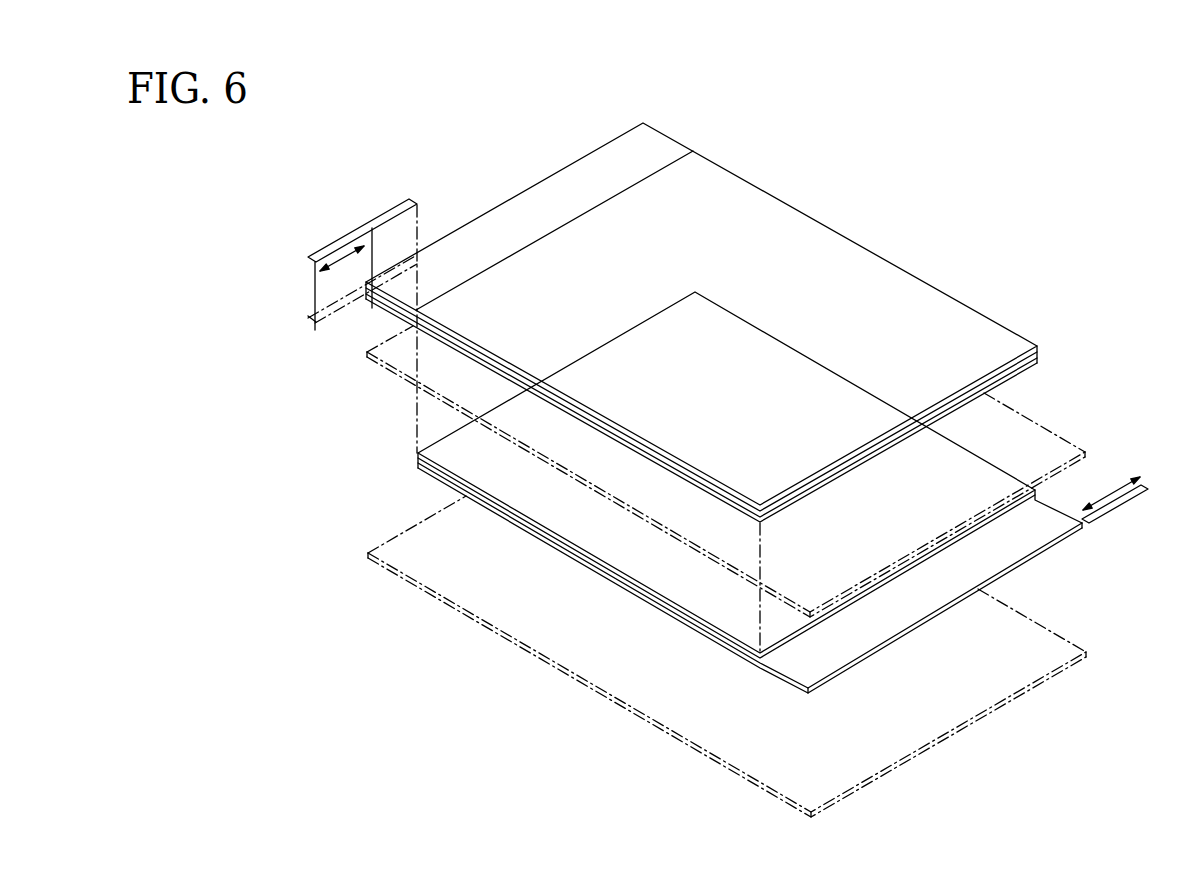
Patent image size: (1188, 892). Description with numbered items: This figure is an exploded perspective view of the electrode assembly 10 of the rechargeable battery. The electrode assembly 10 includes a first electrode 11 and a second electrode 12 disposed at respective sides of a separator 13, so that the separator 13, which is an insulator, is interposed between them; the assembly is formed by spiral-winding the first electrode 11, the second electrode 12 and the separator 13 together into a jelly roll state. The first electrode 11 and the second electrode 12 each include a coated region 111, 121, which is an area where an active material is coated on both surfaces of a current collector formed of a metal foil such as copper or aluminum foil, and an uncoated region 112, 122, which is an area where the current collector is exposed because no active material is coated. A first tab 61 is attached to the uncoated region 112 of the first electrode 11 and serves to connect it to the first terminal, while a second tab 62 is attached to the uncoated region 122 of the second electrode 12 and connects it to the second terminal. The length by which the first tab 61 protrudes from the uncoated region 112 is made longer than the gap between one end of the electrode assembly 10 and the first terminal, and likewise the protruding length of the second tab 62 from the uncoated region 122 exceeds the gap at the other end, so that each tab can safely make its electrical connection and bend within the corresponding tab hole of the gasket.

The electrode assembly 10 is at (560, 101).
The first electrode 11 is at (701, 307).
The coated region 111 is at (692, 178).
The uncoated region 112 is at (653, 150).
The second electrode 12 is at (750, 537).
The coated region 121 is at (720, 598).
The uncoated region 122 is at (810, 652).
The separator 13 is at (408, 532).
The first tab 61 is at (360, 231).
The second tab 62 is at (1117, 506).